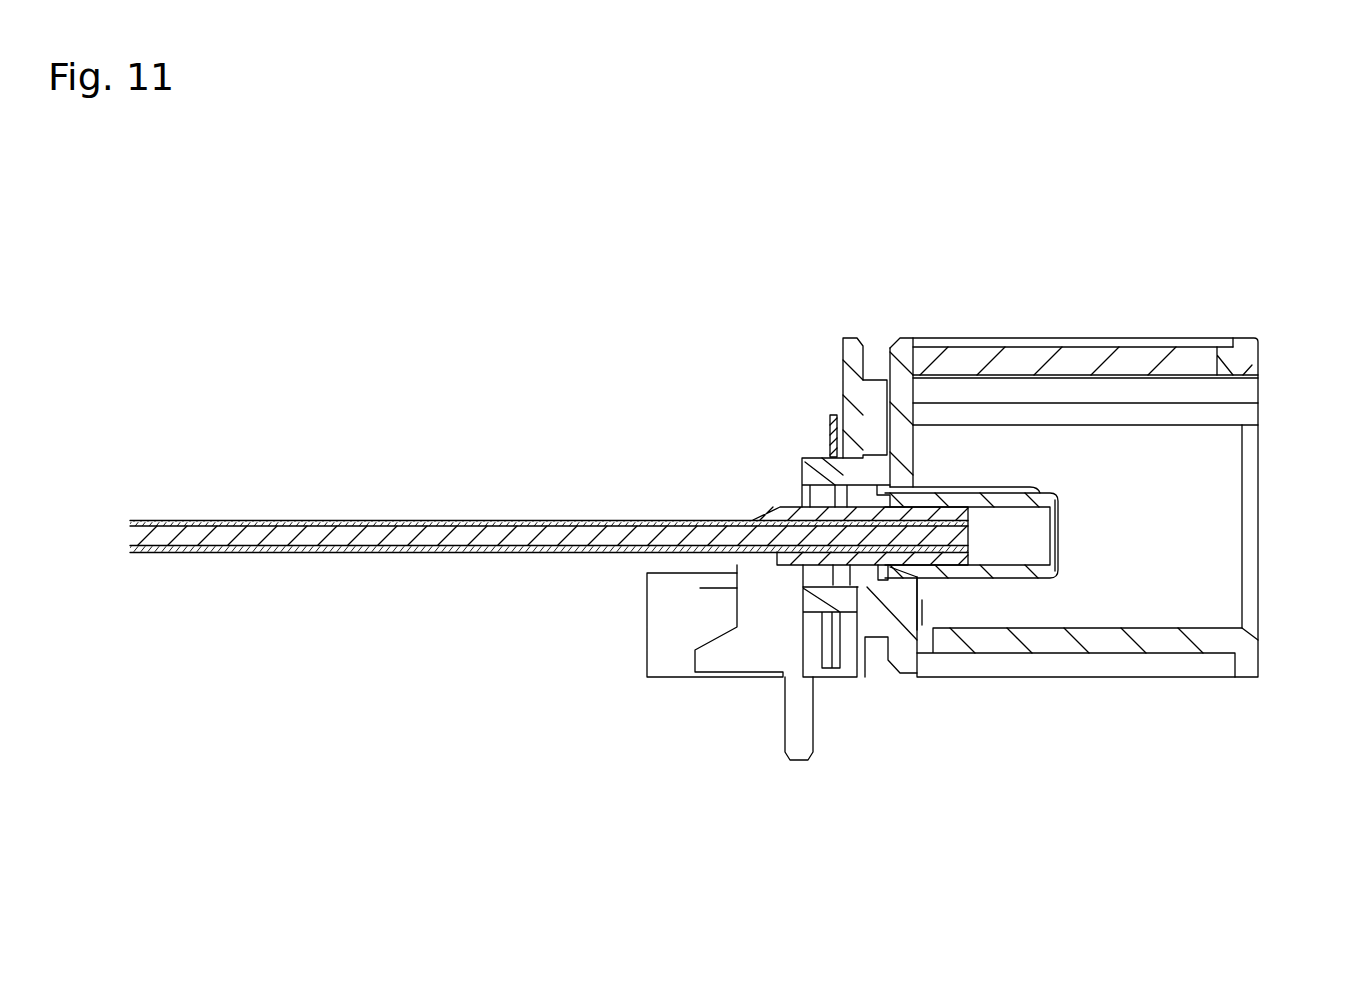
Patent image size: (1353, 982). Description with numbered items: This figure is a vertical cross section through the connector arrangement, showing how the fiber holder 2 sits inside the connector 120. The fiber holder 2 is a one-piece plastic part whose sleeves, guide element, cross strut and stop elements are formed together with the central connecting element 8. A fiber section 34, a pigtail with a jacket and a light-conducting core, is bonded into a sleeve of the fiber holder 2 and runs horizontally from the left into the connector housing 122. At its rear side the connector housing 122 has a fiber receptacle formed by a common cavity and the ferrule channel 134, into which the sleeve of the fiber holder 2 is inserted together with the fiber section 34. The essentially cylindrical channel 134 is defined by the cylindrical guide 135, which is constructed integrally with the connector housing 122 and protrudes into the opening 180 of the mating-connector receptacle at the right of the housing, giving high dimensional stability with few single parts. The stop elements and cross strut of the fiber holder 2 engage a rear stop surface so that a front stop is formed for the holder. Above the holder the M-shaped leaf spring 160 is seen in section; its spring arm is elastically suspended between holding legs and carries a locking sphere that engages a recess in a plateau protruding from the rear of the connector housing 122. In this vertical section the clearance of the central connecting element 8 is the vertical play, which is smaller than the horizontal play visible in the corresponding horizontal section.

The fiber holder 2 is at (788, 560).
The central connecting element 8 is at (847, 577).
The fiber section 34 is at (312, 553).
The connector 120 is at (1023, 677).
The connector housing 122 is at (1108, 677).
The ferrule channel 134 is at (1028, 533).
The cylindrical guide 135 is at (1038, 491).
The leaf spring 160 is at (828, 427).
The opening of the mating-connector receptacle 180 is at (1200, 532).